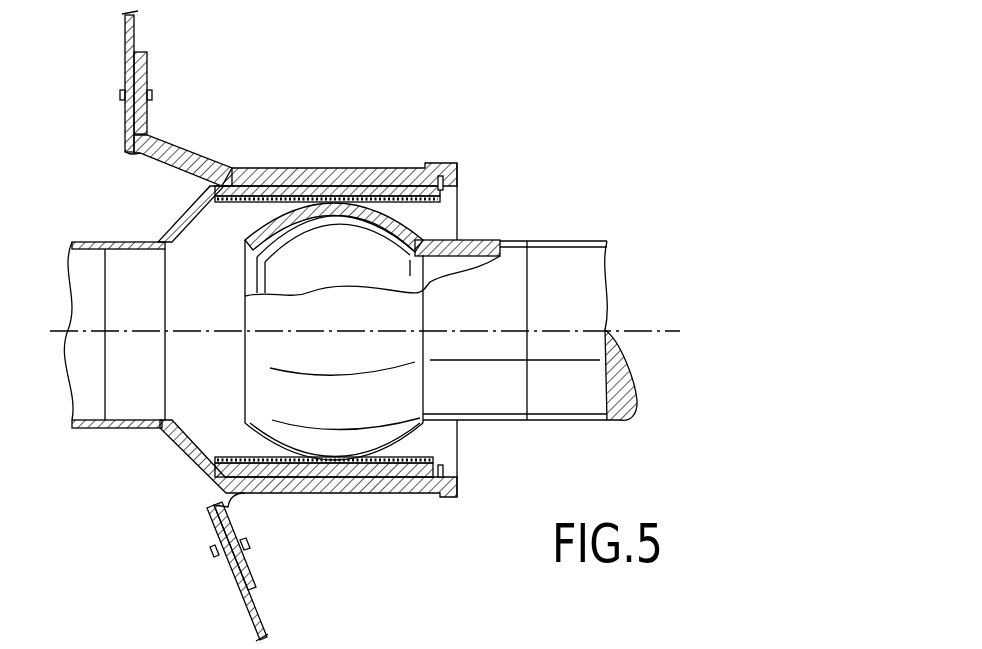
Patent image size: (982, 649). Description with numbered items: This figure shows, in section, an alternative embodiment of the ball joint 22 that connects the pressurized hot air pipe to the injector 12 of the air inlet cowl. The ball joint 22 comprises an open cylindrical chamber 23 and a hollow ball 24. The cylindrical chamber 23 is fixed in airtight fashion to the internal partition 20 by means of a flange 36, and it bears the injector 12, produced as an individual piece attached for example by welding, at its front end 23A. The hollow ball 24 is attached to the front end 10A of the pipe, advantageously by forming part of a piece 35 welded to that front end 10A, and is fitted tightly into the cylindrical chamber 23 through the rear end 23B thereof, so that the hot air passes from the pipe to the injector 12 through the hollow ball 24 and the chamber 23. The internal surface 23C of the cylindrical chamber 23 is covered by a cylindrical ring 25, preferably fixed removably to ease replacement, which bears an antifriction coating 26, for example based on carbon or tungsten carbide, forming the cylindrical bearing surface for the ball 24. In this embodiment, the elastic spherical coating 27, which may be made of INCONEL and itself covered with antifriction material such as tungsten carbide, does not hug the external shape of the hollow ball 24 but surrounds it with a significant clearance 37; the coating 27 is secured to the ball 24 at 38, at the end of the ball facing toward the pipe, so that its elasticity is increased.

The front end of the pipe 10A is at (590, 258).
The injector 12 is at (85, 412).
The internal partition 20 is at (138, 32).
The ball joint 22 is at (343, 90).
The cylindrical chamber 23 is at (382, 175).
The front end of the cylindrical chamber 23A is at (112, 241).
The rear end of the cylindrical chamber 23B is at (462, 195).
The internal surface of the chamber 23C is at (230, 440).
The hollow ball 24 is at (298, 228).
The cylindrical ring 25 is at (240, 190).
The antifriction coating 26 is at (290, 190).
The elastic spherical coating 27 is at (266, 212).
The piece 35 is at (490, 238).
The flange 36 is at (148, 78).
The clearance 37 is at (333, 212).
The securing point 38 is at (452, 165).